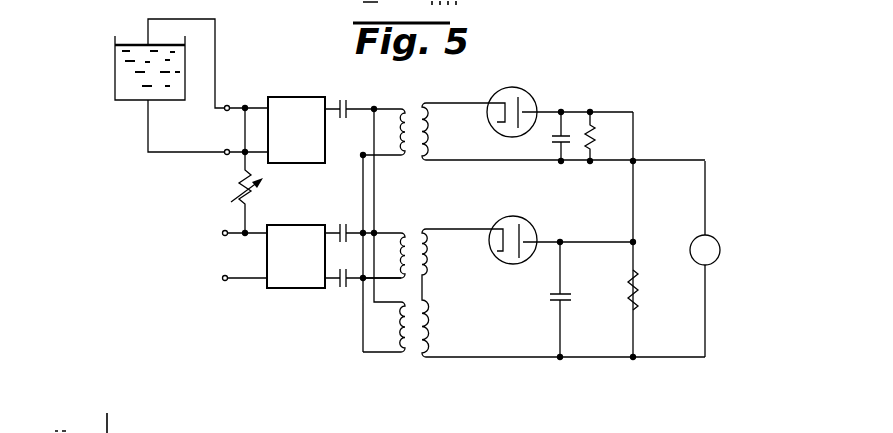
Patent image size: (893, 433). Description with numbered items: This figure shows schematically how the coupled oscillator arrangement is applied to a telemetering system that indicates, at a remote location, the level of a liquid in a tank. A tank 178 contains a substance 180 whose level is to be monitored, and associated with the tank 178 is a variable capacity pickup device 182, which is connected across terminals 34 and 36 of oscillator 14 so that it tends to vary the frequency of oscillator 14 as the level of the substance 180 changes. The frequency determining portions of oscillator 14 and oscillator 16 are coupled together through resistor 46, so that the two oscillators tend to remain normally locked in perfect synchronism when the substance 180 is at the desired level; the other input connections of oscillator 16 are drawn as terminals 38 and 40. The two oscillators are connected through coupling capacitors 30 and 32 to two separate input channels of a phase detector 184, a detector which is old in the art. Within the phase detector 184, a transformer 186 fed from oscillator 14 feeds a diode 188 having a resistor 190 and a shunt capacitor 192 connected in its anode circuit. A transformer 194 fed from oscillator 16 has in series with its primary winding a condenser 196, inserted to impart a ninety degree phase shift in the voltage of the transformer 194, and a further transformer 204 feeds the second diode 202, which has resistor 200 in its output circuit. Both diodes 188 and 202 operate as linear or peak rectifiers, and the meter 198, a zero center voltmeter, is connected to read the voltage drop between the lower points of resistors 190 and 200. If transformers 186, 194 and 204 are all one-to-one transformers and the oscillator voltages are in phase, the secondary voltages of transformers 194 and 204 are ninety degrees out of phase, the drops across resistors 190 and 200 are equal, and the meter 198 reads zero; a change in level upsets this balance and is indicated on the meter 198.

The oscillator 14 is at (288, 153).
The oscillator 16 is at (288, 279).
The coupling capacitor 30 is at (343, 101).
The coupling capacitor 32 is at (342, 224).
The terminal 34 is at (228, 105).
The terminal 36 is at (226, 149).
The terminal 38 is at (222, 232).
The terminal 40 is at (222, 277).
The resistor 46 is at (240, 183).
The tank 178 is at (114, 79).
The substance 180 is at (132, 96).
The variable capacity pickup device 182 is at (131, 44).
The phase detector 184 is at (570, 208).
The transformer 186 is at (413, 108).
The diode 188 is at (530, 96).
The resistor 190 is at (592, 147).
The shunt capacitor 192 is at (552, 141).
The transformer 194 is at (413, 242).
The condenser 196 is at (342, 290).
The meter 198 is at (720, 256).
The resistor 200 is at (633, 280).
The diode 202 is at (506, 262).
The transformer 204 is at (413, 352).